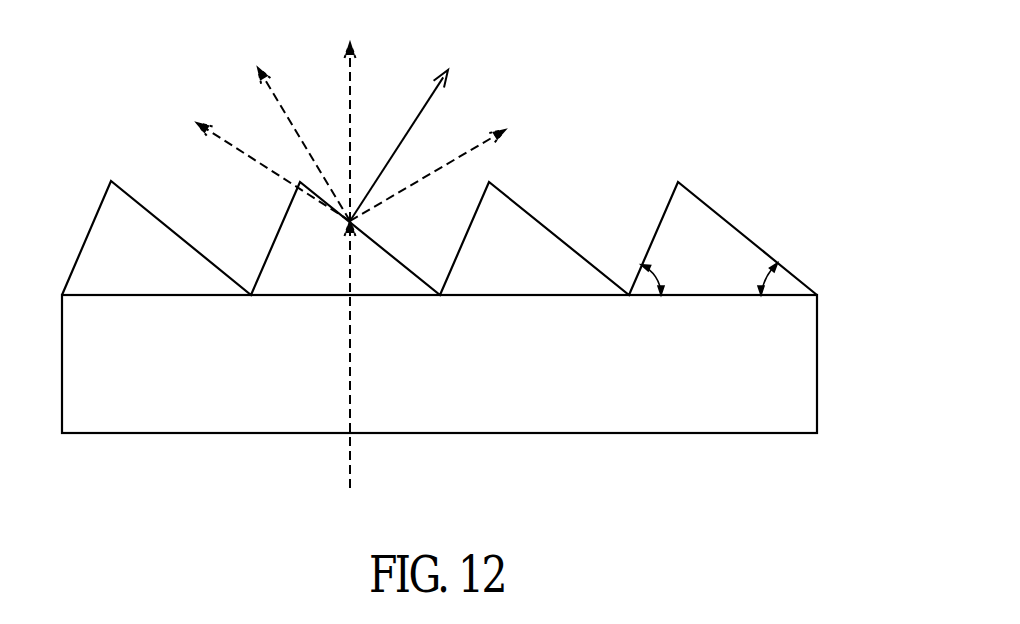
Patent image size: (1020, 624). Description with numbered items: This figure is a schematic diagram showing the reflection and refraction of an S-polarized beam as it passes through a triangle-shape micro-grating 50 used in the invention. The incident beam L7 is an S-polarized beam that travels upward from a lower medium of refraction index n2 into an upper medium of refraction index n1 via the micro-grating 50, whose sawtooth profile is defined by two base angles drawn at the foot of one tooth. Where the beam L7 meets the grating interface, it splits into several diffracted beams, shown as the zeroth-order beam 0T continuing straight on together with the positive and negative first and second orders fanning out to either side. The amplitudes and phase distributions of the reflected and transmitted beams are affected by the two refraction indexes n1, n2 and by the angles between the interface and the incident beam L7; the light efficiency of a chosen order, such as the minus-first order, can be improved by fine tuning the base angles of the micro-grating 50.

The micro-grating 50 is at (552, 212).
The incident beam L7 is at (352, 375).
The refraction index n1 is at (712, 238).
The refraction index n2 is at (439, 364).
The zeroth-order diffracted beam 0T is at (349, 113).